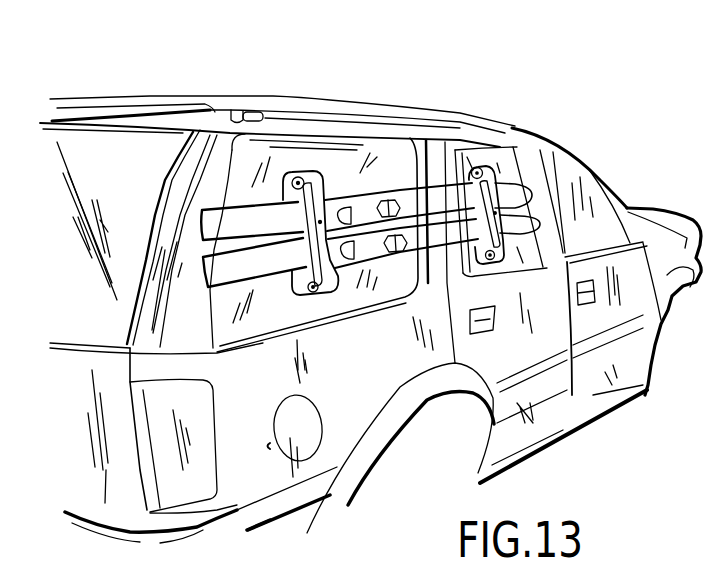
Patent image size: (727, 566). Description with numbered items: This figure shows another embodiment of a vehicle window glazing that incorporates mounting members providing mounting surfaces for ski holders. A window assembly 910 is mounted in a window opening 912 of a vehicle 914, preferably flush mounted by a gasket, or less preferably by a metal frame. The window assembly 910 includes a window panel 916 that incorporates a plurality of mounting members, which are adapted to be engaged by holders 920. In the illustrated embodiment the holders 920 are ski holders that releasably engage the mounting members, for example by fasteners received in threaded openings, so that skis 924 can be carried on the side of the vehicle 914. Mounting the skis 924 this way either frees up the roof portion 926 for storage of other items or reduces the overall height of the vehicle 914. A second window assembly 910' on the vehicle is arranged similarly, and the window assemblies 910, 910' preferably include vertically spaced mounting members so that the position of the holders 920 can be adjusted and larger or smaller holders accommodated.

The window assembly 910 is at (415, 151).
The window assembly 910' is at (578, 333).
The window opening 912 is at (250, 157).
The vehicle 914 is at (523, 119).
The window panel 916 is at (335, 158).
The holders 920 is at (327, 294).
The skis 924 is at (212, 221).
The roof portion 926 is at (160, 98).